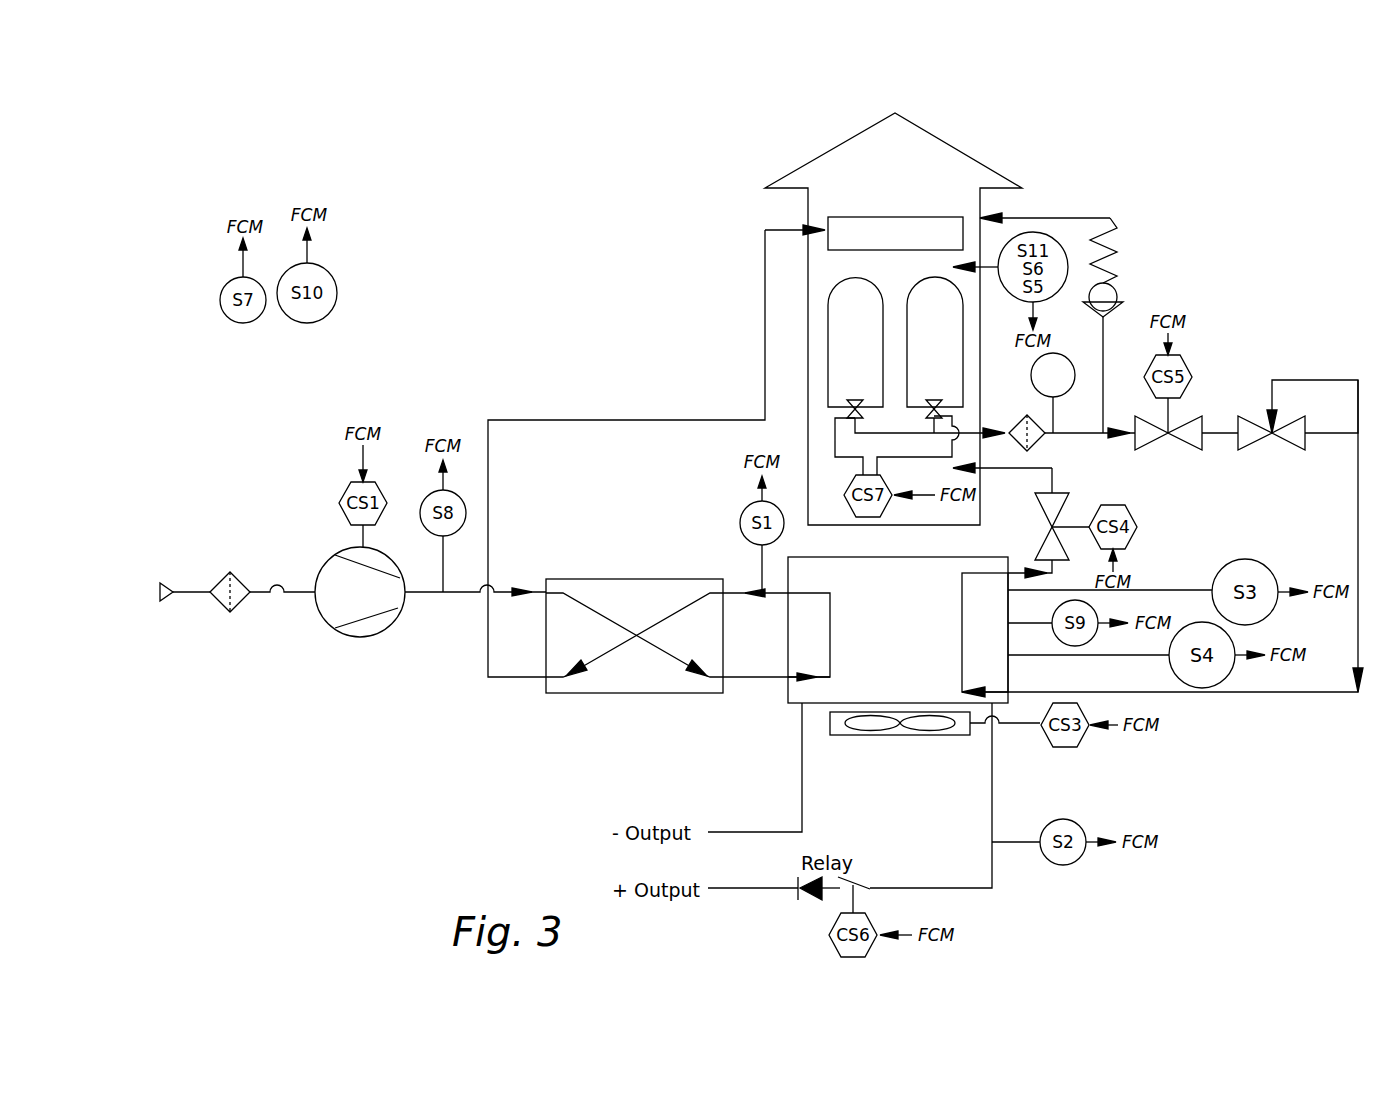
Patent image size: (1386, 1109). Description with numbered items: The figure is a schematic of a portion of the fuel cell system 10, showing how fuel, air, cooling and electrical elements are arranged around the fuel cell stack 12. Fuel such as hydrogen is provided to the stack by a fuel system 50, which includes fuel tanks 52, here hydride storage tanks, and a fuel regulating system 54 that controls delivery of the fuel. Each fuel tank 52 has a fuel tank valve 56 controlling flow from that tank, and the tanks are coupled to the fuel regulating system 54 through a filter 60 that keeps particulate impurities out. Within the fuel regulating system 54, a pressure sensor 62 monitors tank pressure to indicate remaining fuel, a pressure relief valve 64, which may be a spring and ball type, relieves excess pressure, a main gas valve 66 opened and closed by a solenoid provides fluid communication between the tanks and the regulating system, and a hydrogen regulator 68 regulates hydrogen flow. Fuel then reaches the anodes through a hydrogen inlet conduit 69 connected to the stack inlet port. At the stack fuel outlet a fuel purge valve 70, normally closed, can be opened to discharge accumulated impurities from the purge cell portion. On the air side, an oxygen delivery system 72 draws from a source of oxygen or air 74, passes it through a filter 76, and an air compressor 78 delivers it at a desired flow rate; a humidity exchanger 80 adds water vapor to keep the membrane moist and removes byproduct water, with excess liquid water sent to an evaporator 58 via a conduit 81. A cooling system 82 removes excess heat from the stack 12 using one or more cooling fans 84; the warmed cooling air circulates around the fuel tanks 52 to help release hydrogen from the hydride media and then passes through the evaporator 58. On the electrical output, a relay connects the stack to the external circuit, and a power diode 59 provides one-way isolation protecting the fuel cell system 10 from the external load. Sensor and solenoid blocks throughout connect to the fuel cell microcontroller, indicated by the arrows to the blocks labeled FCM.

The fuel cell system 10 is at (303, 819).
The fuel cell stack 12 is at (783, 694).
The fuel system 50 is at (1132, 181).
The fuel tanks 52 is at (897, 306).
The fuel regulating system 54 is at (1243, 222).
The fuel tank valve 56 is at (930, 417).
The evaporator 58 is at (962, 215).
The power diode 59 is at (808, 895).
The filter 60 is at (1042, 442).
The pressure sensor 62 is at (1031, 379).
The pressure relief valve 64 is at (1117, 290).
The main gas valve 66 is at (1135, 425).
The hydrogen regulator 68 is at (1240, 425).
The hydrogen inlet conduit 69 is at (1315, 692).
The fuel purge valve 70 is at (1040, 520).
The oxygen delivery system 72 is at (316, 719).
The source of oxygen or air 74 is at (166, 585).
The filter 76 is at (243, 578).
The air compressor 78 is at (400, 615).
The humidity exchanger 80 is at (636, 579).
The conduit 81 is at (505, 680).
The cooling system 82 is at (735, 774).
The cooling fans 84 is at (968, 735).